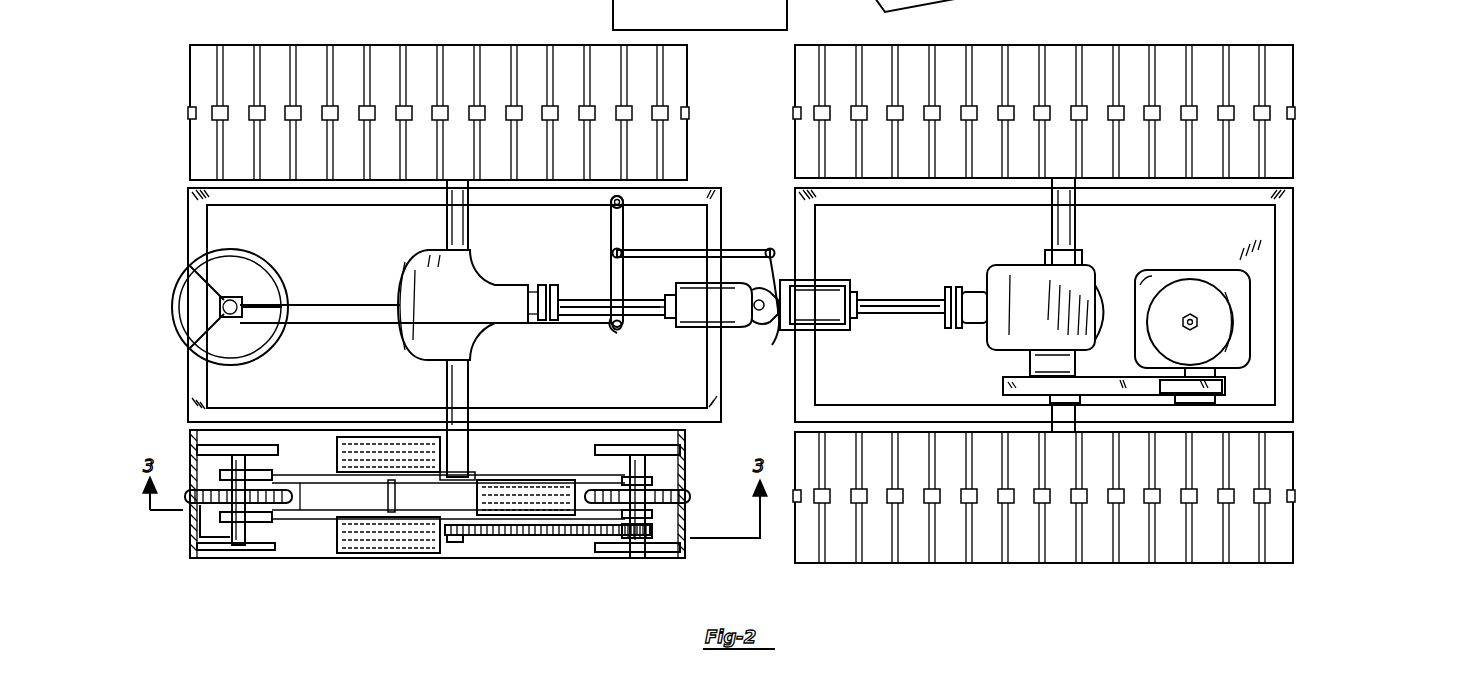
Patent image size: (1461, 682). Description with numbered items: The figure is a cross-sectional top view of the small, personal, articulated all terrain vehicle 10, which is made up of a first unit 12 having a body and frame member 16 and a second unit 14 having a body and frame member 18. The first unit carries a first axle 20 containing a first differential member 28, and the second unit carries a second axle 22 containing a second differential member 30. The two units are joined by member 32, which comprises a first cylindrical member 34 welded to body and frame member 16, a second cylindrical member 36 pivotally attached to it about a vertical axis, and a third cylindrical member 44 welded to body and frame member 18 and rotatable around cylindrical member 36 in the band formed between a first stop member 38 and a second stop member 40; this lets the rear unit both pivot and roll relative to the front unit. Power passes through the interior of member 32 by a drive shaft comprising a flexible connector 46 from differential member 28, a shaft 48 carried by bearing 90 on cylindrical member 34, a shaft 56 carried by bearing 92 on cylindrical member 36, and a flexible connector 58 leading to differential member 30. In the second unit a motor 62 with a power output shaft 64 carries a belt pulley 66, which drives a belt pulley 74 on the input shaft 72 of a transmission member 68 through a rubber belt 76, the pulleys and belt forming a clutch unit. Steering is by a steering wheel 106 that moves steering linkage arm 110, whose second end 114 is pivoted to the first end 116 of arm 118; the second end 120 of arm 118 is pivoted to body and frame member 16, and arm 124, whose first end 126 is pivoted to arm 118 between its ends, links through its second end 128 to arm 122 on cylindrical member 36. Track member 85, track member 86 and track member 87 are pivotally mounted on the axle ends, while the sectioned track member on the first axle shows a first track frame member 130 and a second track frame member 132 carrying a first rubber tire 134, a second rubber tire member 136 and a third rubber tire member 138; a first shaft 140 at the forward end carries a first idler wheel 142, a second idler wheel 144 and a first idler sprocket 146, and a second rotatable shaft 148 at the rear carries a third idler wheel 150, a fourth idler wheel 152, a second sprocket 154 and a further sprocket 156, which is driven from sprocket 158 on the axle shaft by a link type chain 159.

The all terrain vehicle 10 is at (1368, 248).
The first unit 12 is at (180, 205).
The second unit 14 is at (1358, 218).
The body and frame member 16 is at (188, 223).
The body and frame member 18 is at (1293, 280).
The first axle 20 is at (447, 230).
The second axle 22 is at (1052, 225).
The first differential member 28 is at (428, 292).
The second differential member 30 is at (1055, 298).
The member 32 is at (735, 350).
The first cylindrical member 34 is at (688, 328).
The second cylindrical member 36 is at (773, 332).
The first stop member 38 is at (785, 326).
The second stop member 40 is at (853, 293).
The third cylindrical member 44 is at (832, 282).
The flexible connector 46 is at (547, 292).
The shaft 48 is at (590, 300).
The shaft 56 is at (876, 314).
The flexible connector 58 is at (953, 328).
The motor 62 is at (1250, 327).
The power output shaft 64 is at (1216, 372).
The belt pulley 66 is at (1222, 387).
The transmission member 68 is at (1082, 280).
The input shaft 72 is at (1058, 368).
The belt pulley 74 is at (1003, 385).
The belt 76 is at (1215, 400).
The second track member 85 is at (418, 90).
The third track member 86 is at (1044, 533).
The fourth track member 87 is at (1044, 89).
The bearing 90 is at (668, 298).
The bearing 92 is at (860, 305).
The steering wheel 106 is at (176, 310).
The steering linkage arm 110 is at (330, 323).
The second end 114 is at (612, 330).
The first end 116 is at (620, 330).
The steering linkage arm 118 is at (628, 226).
The second end 120 is at (625, 203).
The arm 122 is at (782, 270).
The steering linkage arm 124 is at (728, 250).
The pin 126 is at (612, 253).
The second end 128 is at (768, 251).
The first track frame member 130 is at (331, 545).
The second track frame member 132 is at (306, 478).
The first rubber tire 134 is at (382, 553).
The second rubber tire member 136 is at (385, 440).
The third rubber tire member 138 is at (515, 493).
The first shaft 140 is at (250, 530).
The first idler wheel 142 is at (238, 550).
The second idler wheel 144 is at (200, 450).
The first idler sprocket 146 is at (187, 498).
The second rotatable shaft 148 is at (648, 472).
The third idler wheel 150 is at (648, 552).
The fourth idler wheel 152 is at (598, 450).
The second sprocket 154 is at (692, 497).
The sprocket 156 is at (630, 538).
The sprocket 158 is at (468, 542).
The link type chain 159 is at (533, 536).